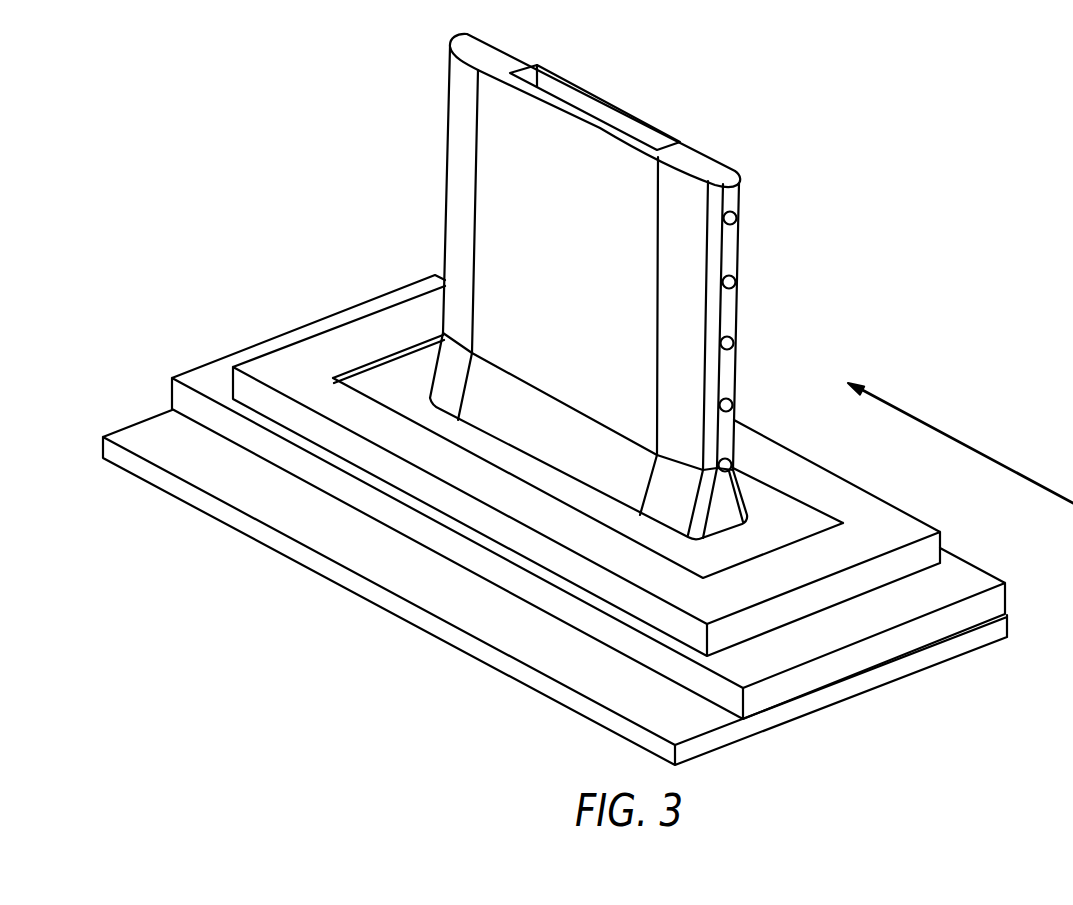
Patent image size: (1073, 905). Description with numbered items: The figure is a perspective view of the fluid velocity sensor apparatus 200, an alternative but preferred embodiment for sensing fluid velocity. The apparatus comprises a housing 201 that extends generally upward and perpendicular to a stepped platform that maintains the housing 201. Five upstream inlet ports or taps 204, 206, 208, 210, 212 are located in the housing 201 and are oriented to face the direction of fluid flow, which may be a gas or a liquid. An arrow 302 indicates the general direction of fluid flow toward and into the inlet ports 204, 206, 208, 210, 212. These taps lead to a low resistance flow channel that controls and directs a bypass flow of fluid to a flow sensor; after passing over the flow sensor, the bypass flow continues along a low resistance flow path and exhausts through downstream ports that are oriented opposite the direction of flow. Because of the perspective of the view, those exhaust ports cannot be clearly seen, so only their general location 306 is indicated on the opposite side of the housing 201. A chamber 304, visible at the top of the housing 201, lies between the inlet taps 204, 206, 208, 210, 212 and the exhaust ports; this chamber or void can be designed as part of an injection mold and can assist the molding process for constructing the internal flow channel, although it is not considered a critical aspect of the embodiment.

The fluid velocity sensor apparatus 200 is at (770, 66).
The housing 201 is at (594, 284).
The upstream tap 204 is at (737, 216).
The upstream tap 206 is at (736, 280).
The upstream tap 208 is at (734, 341).
The upstream tap 210 is at (733, 403).
The upstream tap 212 is at (732, 467).
The arrow 302 is at (959, 443).
The chamber 304 is at (612, 105).
The general location of the ports 306 is at (417, 382).